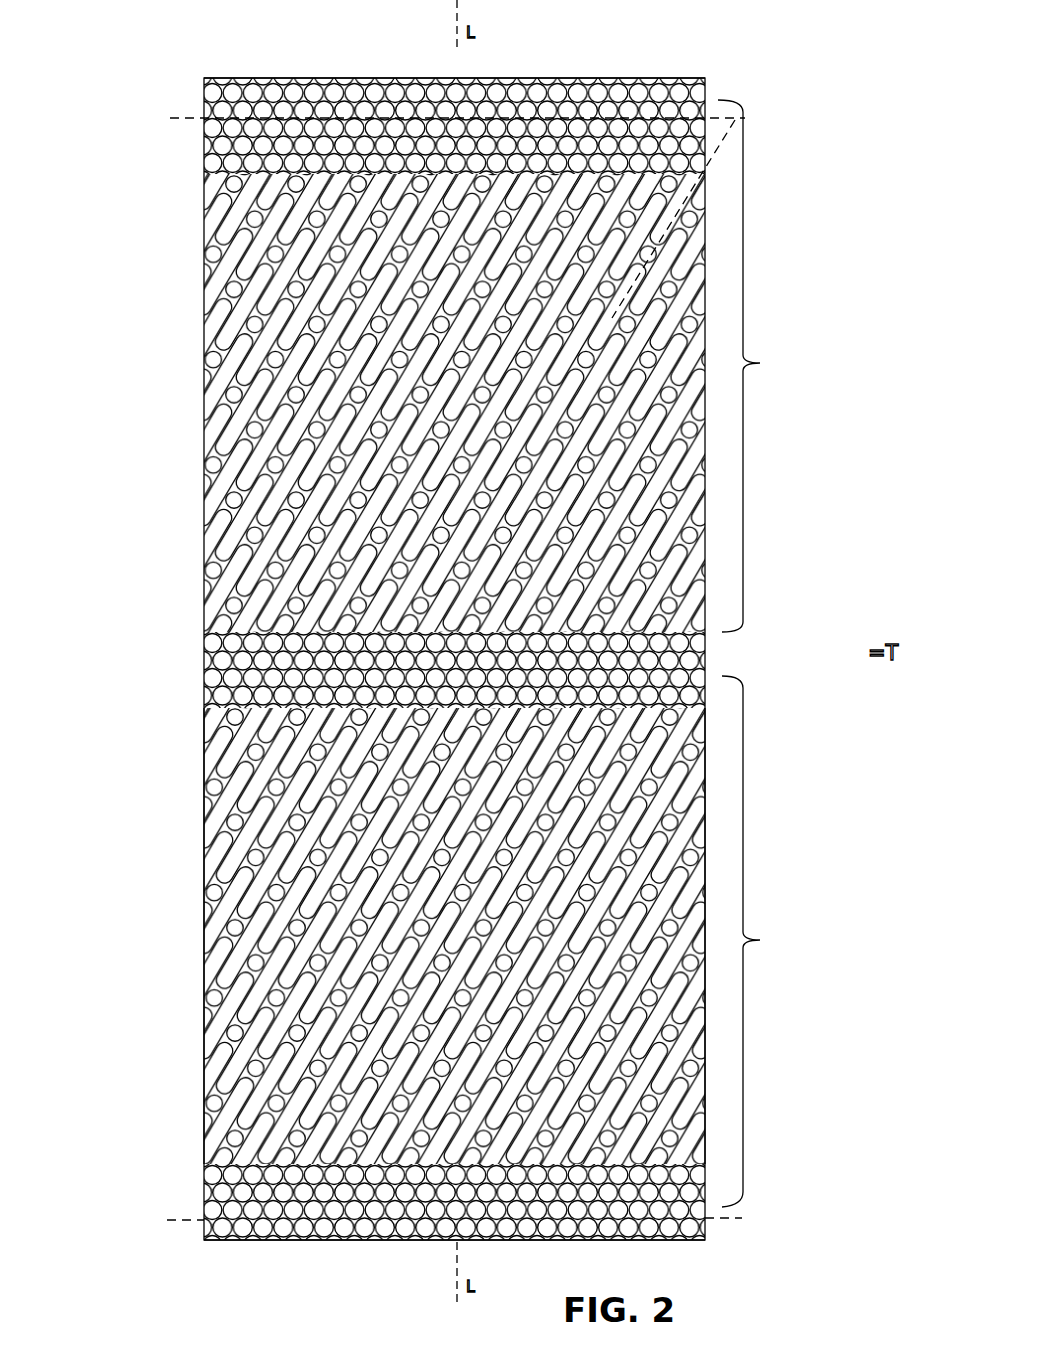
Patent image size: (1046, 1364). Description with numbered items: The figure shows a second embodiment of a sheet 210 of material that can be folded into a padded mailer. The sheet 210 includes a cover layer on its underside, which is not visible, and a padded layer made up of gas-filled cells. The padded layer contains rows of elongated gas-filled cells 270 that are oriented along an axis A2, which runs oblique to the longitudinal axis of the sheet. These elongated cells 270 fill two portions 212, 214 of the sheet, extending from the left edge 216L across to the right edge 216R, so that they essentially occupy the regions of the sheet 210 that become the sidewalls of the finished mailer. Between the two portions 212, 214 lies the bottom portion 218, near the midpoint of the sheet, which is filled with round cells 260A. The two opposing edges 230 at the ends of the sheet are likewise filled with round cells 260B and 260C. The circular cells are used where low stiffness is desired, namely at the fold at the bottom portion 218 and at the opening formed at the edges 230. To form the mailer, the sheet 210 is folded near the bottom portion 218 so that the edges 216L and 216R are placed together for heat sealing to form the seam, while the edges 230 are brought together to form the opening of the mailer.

The sheet 210 is at (433, 658).
The portion 212 is at (451, 355).
The portion 214 is at (453, 993).
The left edge 216L is at (220, 853).
The right edge 216R is at (705, 1147).
The bottom portion 218 is at (433, 670).
The opposing edge 230 is at (222, 112).
The round cells 260A is at (705, 658).
The round cells 260B is at (220, 147).
The bottom fiber row 260C is at (237, 1228).
The elongated gas-filled cells 270 is at (240, 423).
The axis A2 is at (676, 219).